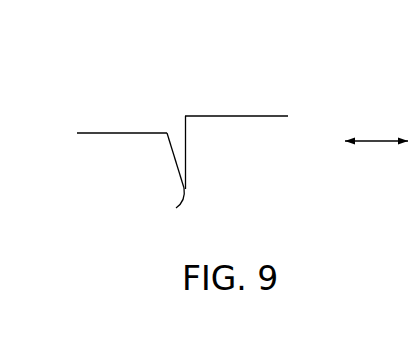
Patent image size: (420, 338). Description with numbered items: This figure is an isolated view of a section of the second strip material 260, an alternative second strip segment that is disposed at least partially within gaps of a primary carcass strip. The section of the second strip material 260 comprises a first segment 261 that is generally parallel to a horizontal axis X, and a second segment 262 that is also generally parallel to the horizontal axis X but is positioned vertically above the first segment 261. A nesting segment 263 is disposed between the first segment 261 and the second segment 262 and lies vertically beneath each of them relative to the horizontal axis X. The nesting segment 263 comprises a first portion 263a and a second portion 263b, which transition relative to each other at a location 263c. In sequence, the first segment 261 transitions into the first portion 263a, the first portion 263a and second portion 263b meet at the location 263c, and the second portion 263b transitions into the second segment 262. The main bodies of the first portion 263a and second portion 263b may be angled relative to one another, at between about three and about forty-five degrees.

The second strip material 260 is at (140, 75).
The first segment 261 is at (108, 133).
The second segment 262 is at (256, 116).
The nesting segment 263 is at (192, 180).
The first portion 263a is at (173, 154).
The second portion 263b is at (186, 143).
The location 263c is at (178, 204).
The horizontal axis X is at (376, 129).